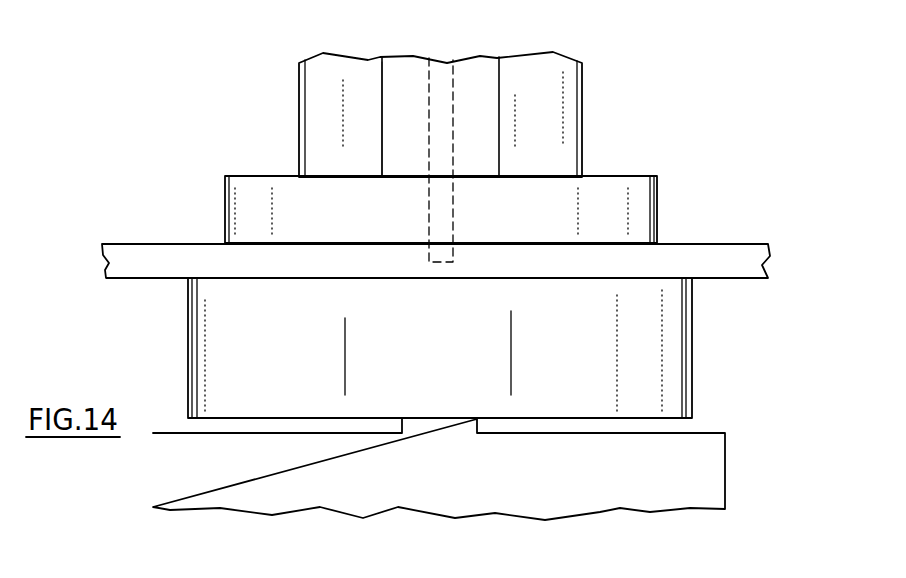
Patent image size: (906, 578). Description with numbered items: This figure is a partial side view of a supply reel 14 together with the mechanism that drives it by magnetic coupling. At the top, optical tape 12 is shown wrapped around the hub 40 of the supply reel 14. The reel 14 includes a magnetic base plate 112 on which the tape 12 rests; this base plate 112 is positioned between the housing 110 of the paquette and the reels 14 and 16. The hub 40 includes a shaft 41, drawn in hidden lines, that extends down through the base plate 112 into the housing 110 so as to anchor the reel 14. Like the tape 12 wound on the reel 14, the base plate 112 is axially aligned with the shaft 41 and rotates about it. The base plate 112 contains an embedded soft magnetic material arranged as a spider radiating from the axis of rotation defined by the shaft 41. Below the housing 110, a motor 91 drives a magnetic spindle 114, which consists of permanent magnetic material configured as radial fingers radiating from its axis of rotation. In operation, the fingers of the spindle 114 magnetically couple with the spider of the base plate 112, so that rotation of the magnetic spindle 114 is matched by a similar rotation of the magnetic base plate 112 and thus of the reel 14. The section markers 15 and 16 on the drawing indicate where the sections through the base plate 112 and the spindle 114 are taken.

The optical tape 12 is at (584, 79).
The supply reel 14 is at (628, 112).
The section line 15- 15 is at (205, 210).
The reel 16 is at (180, 387).
The hub 40 is at (382, 70).
The shaft 41 is at (454, 78).
The motor 91 is at (726, 470).
The housing 110 is at (744, 245).
The magnetic base plate 112 is at (657, 184).
The magnetic spindle 114 is at (692, 326).